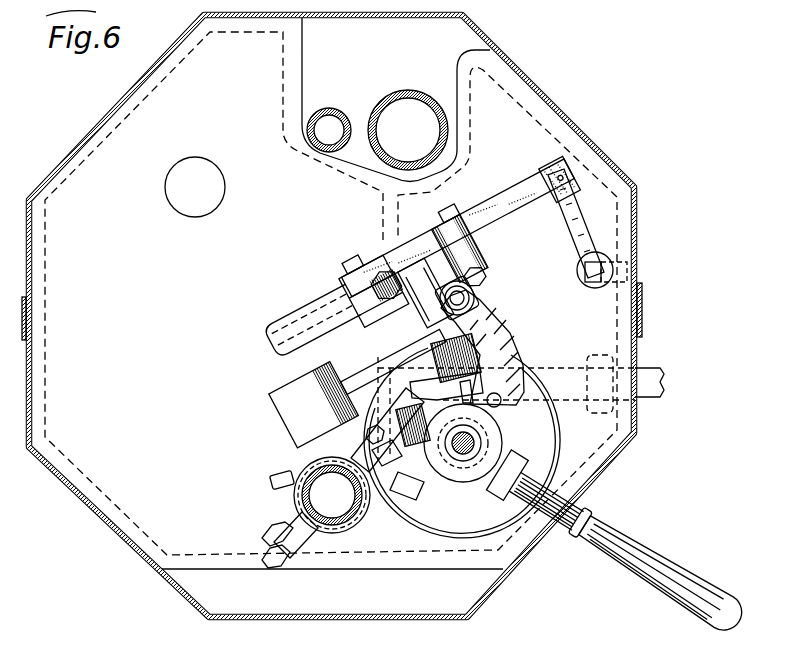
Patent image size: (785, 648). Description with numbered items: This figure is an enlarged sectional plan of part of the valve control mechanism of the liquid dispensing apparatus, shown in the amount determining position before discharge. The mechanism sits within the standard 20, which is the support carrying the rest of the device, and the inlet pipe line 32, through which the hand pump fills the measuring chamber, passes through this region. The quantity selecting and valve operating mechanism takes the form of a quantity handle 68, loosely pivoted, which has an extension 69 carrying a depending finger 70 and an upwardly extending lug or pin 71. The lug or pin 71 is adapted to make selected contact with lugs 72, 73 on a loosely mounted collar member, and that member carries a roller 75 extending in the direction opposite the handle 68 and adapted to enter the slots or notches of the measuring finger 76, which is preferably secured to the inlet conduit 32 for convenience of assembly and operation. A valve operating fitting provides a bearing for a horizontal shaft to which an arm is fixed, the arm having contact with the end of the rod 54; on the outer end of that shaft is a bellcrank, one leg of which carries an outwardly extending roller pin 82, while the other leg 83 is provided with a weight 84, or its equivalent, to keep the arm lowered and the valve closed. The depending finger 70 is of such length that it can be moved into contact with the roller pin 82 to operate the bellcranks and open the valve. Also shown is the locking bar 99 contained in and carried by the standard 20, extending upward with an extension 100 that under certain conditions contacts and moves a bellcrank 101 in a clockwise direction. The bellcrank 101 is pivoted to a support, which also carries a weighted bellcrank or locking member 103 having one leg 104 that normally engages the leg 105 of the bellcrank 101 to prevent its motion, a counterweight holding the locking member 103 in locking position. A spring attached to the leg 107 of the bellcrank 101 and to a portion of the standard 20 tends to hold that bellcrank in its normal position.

The standard 20 is at (100, 518).
The pipe line 32 is at (330, 525).
The rod 54 is at (463, 448).
The quantity handle 68 is at (710, 597).
The extension 69 is at (504, 323).
The depending finger 70 is at (474, 298).
The lug or pin 71 is at (500, 398).
The lug 72 is at (512, 410).
The lug 73 is at (507, 380).
The roller 75 is at (357, 430).
The measuring finger 76 is at (357, 528).
The roller pin 82 is at (416, 300).
The leg 83 is at (368, 380).
The weight 84 is at (293, 420).
The locking bar 99 is at (606, 284).
The extension 100 is at (578, 232).
The bellcrank 101 is at (512, 190).
The weighted bellcrank or locking member 103 is at (292, 330).
The leg 104 is at (420, 248).
The leg 105 is at (465, 276).
The leg 107 is at (573, 186).